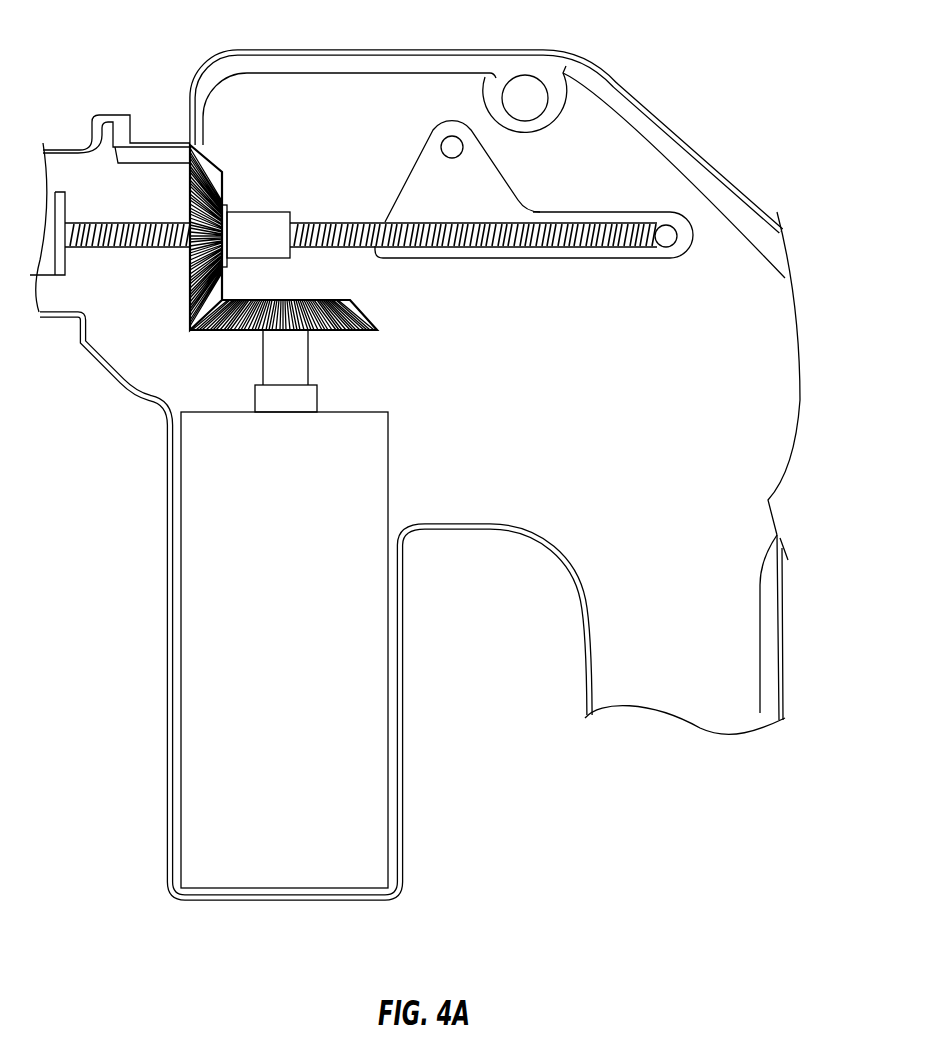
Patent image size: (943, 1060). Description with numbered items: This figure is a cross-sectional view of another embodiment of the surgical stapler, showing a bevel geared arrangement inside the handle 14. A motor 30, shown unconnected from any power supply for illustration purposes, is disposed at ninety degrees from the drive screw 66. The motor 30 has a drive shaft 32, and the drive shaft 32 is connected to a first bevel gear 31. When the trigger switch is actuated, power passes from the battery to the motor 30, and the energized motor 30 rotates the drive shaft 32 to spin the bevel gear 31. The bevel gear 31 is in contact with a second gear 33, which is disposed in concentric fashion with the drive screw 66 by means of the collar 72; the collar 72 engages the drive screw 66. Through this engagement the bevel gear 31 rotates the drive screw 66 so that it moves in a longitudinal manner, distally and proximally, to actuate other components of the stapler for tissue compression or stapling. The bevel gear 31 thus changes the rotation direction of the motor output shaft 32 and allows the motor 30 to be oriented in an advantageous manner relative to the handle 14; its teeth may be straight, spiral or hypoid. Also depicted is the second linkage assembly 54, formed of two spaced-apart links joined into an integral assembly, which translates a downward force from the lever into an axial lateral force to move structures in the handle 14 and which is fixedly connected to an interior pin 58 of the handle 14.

The handle 14 is at (580, 623).
The motor 30 is at (372, 412).
The first bevel gear 31 is at (329, 300).
The drive shaft 32 is at (263, 355).
The second gear 33 is at (188, 282).
The second linkage assembly 54 is at (453, 147).
The interior pin 58 is at (668, 235).
The drive screw 66 is at (522, 215).
The collar 72 is at (255, 212).